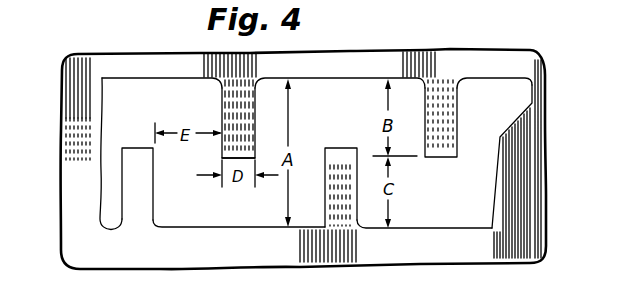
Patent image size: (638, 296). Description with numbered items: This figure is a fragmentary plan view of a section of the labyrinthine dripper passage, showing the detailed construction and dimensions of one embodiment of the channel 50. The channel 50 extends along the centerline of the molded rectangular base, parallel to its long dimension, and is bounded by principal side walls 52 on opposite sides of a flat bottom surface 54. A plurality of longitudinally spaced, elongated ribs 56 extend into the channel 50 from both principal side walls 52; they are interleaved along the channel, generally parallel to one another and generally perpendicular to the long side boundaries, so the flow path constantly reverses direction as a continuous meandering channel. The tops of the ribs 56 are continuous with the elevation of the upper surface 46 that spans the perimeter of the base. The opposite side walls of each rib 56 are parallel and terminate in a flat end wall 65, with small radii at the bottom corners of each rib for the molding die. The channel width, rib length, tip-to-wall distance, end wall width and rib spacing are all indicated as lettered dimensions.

The upper surface 46 is at (428, 88).
The labyrinthine channel 50 is at (118, 92).
The principal side walls 52 is at (313, 80).
The flat bottom surface 54 is at (218, 218).
The ribs 56 is at (237, 102).
The flat end wall 65 is at (250, 160).